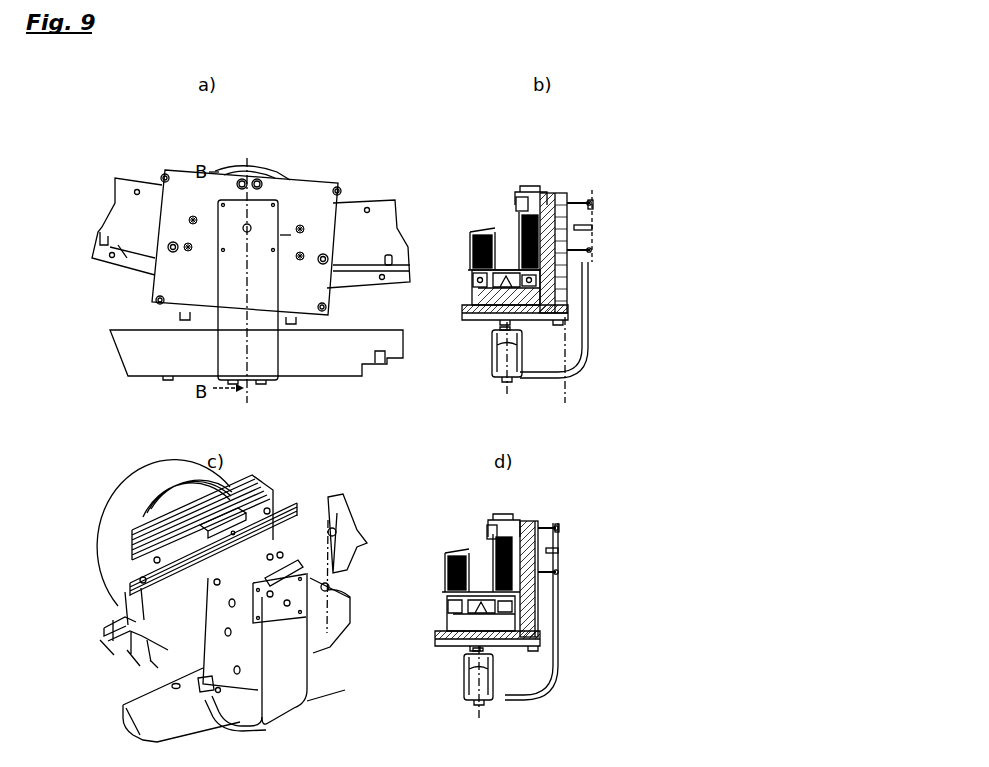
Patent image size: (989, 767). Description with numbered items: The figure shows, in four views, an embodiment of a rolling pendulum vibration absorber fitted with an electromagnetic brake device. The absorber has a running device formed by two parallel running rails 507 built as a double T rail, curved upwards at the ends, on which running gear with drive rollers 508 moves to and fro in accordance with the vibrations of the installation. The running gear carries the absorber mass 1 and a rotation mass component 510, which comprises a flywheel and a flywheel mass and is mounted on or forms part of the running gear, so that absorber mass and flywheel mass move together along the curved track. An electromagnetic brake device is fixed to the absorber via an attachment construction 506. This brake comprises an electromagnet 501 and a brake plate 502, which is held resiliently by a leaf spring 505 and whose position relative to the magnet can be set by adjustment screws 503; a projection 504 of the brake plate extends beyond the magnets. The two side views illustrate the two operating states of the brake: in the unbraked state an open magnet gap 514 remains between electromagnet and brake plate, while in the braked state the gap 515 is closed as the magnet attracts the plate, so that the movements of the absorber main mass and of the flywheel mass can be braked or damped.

The absorber mass 1 is at (290, 203).
The electromagnet 501 is at (593, 206).
The brake plate 502 is at (565, 203).
The adjustment screws for brake plate 503 is at (570, 250).
The projection of the brake plate beyond magnets 504 is at (563, 222).
The leaf spring 505 is at (228, 303).
The attachment construction 506 is at (328, 520).
The running rail 507 is at (103, 230).
The drive rollers 508 is at (520, 232).
The rotation mass component 510 is at (177, 490).
The magnet gap unbraked 514 is at (518, 199).
The magnet gap braked 515 is at (488, 530).